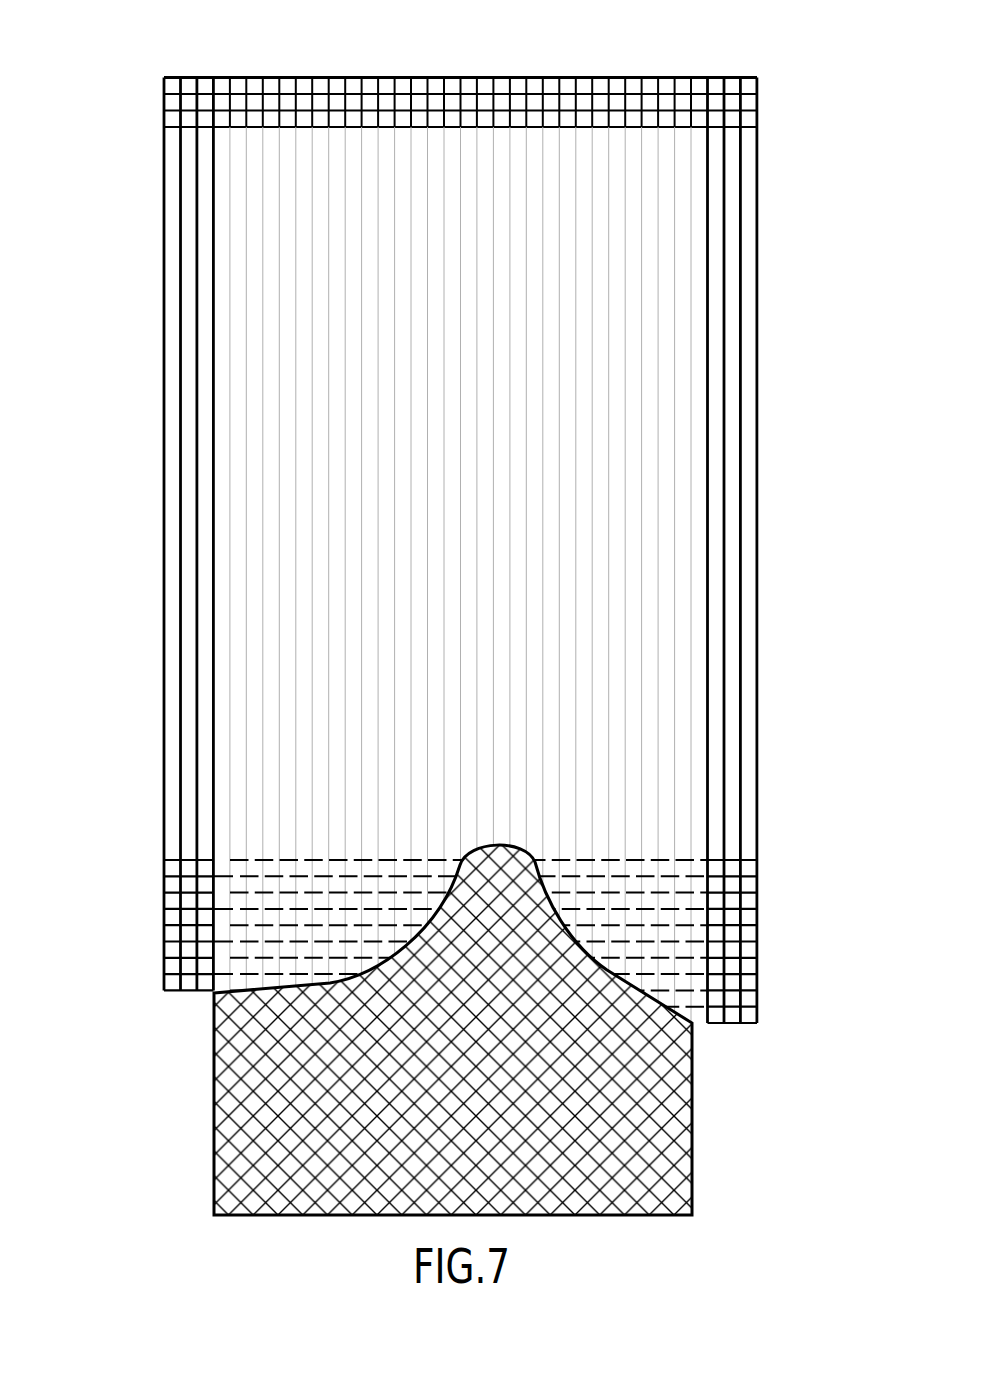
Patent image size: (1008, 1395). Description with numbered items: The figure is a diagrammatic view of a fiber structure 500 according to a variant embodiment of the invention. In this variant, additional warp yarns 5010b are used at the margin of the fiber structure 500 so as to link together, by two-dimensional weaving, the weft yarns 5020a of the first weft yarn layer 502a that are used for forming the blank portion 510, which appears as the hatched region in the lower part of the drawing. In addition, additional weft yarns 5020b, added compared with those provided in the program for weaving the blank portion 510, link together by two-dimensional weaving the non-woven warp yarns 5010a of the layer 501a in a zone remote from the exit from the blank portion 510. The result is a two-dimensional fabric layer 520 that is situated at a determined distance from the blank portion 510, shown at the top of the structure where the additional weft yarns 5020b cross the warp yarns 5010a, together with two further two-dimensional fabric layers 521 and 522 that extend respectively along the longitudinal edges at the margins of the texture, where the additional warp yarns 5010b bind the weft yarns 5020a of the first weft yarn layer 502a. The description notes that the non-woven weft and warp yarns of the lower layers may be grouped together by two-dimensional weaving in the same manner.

The fiber structure 500 is at (100, 75).
The two-dimensional fabric layer 520 is at (257, 92).
The additional weft yarns 5020b is at (757, 78).
The additional warp yarns 5010b is at (708, 157).
The non-woven warp yarns 5010a is at (658, 267).
The layer 501a is at (592, 436).
The weft yarns 5020a is at (168, 940).
The first weft yarn layer 502a is at (760, 860).
The two-dimensional fabric layer 522 is at (164, 997).
The two-dimensional fabric layer 521 is at (708, 1030).
The blank portion 510 is at (640, 1114).